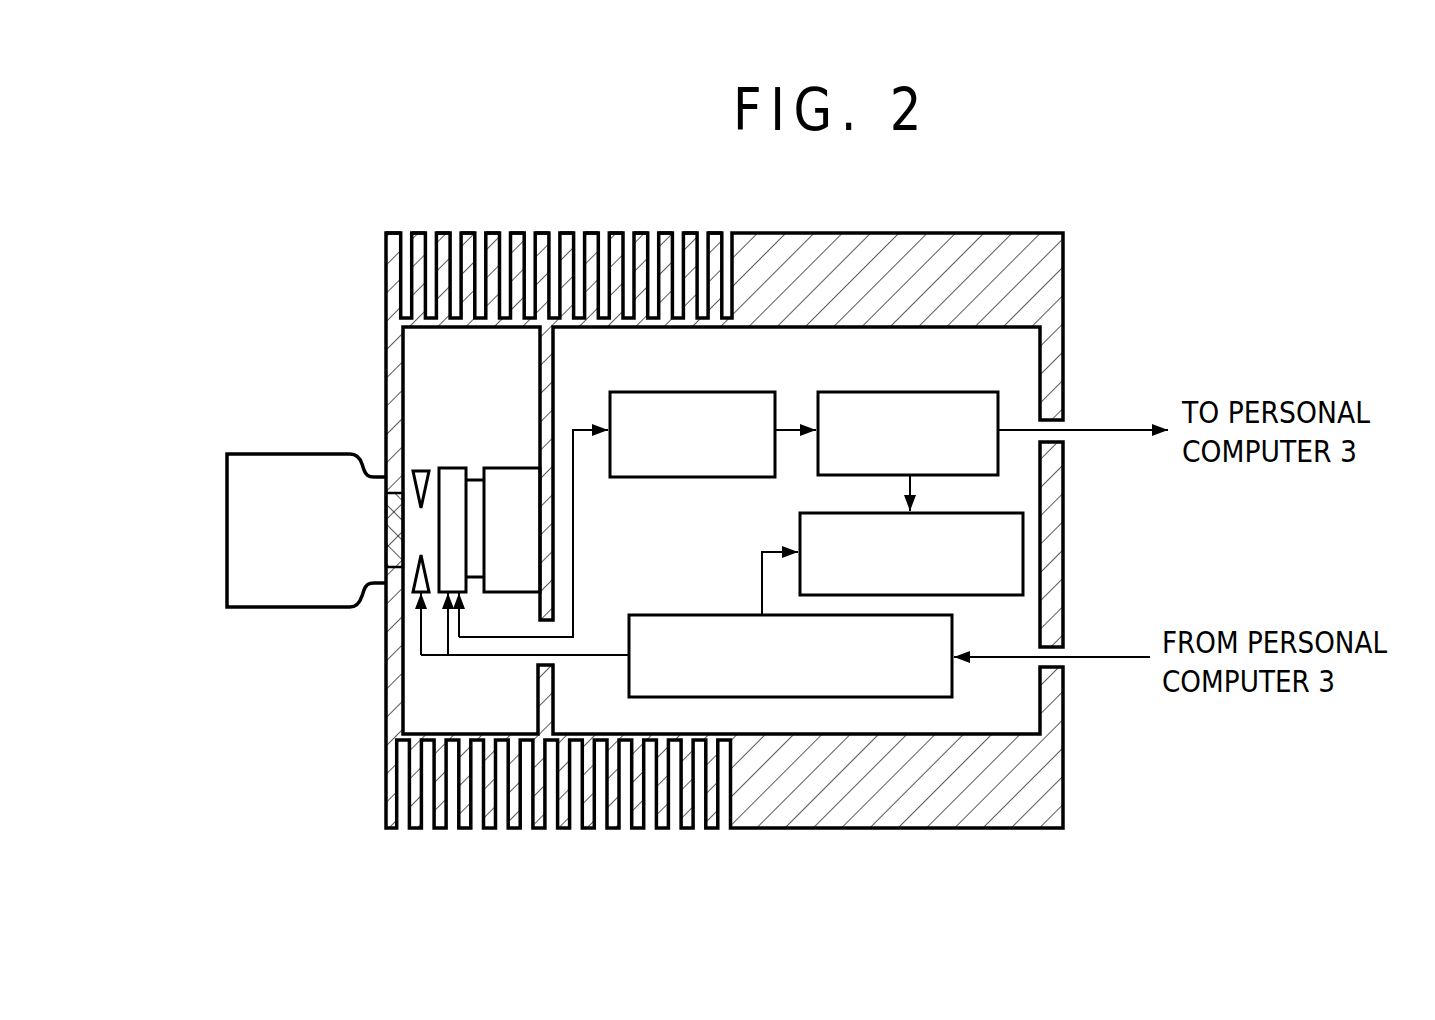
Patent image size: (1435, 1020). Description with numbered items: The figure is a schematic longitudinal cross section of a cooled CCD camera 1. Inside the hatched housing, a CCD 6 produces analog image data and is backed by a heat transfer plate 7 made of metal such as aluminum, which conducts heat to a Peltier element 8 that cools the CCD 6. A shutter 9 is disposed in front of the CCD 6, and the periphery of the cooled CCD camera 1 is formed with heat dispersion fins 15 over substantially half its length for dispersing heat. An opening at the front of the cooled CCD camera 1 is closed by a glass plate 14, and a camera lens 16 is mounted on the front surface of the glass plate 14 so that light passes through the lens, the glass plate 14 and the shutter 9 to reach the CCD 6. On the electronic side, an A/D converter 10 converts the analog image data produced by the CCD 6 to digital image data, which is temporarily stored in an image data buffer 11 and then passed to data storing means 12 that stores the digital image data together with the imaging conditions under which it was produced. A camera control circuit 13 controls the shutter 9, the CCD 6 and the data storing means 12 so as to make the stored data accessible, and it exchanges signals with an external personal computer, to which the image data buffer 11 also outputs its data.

The cooled CCD camera 1 is at (1086, 268).
The CCD 6 is at (453, 482).
The heat transfer plate 7 is at (477, 507).
The Peltier element 8 is at (522, 477).
The shutter 9 is at (421, 467).
The A/D converter 10 is at (755, 398).
The image data buffer 11 is at (965, 392).
The data storing means 12 is at (990, 597).
The camera control circuit 13 is at (735, 612).
The glass plate 14 is at (394, 523).
The heat dispersion fins 15 is at (512, 222).
The camera lens 16 is at (293, 575).